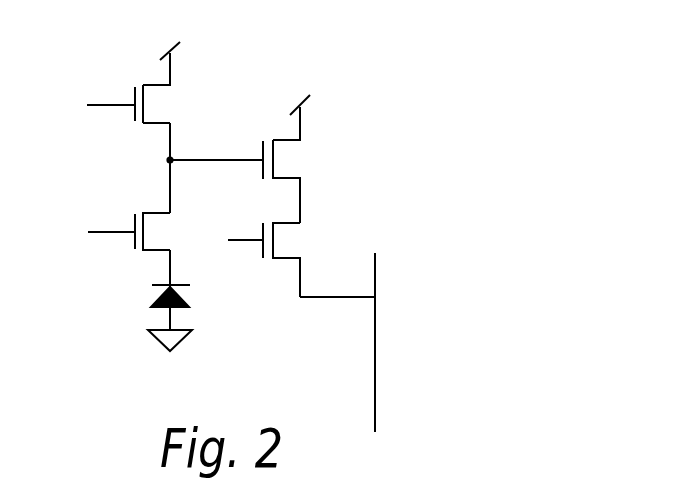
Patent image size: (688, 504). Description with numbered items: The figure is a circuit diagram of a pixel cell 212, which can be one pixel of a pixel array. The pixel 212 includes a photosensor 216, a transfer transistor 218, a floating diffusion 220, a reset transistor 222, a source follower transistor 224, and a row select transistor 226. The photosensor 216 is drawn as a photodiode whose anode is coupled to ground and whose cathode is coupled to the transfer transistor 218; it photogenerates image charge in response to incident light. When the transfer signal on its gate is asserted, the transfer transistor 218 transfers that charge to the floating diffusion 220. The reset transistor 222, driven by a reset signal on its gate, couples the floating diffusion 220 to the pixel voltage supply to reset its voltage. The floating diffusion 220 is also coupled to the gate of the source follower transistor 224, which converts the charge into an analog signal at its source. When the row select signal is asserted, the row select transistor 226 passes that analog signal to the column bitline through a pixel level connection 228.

The pixel cell 212 is at (316, 32).
The photosensor 216 is at (186, 297).
The transfer transistor 218 is at (125, 205).
The floating diffusion 220 is at (252, 162).
The reset transistor 222 is at (121, 121).
The source follower transistor 224 is at (272, 131).
The row select transistor 226 is at (274, 276).
The pixel level connection 228 is at (360, 293).